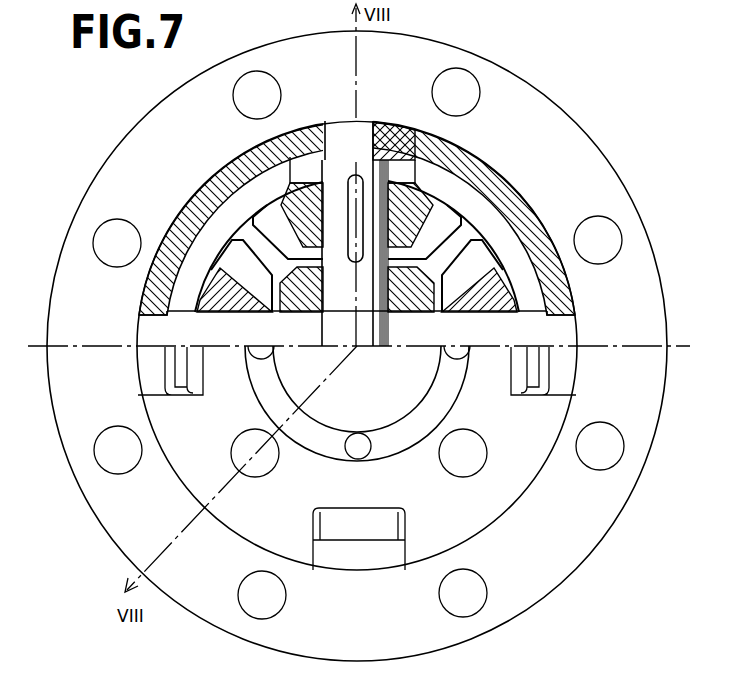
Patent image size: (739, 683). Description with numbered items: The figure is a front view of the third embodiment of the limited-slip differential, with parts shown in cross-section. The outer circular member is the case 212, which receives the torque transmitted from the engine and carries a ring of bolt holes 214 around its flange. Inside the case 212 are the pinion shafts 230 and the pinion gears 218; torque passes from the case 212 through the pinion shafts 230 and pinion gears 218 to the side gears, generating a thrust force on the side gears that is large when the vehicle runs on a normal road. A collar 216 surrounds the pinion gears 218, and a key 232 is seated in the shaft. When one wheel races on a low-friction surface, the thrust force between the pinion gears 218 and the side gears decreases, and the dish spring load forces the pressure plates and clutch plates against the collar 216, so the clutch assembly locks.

The case 212 is at (564, 133).
The bolt hole 214 is at (467, 80).
The collar 216 is at (210, 240).
The pinion gears 218 is at (262, 200).
The pinion shafts 230 is at (340, 137).
The key 232 is at (404, 165).